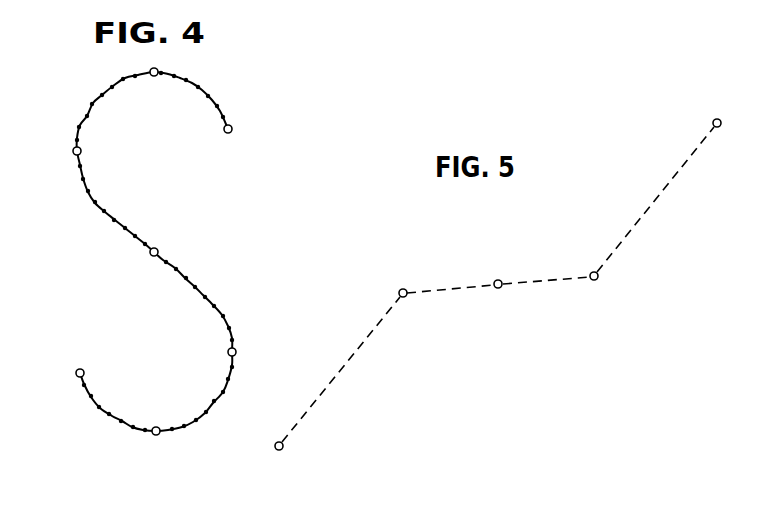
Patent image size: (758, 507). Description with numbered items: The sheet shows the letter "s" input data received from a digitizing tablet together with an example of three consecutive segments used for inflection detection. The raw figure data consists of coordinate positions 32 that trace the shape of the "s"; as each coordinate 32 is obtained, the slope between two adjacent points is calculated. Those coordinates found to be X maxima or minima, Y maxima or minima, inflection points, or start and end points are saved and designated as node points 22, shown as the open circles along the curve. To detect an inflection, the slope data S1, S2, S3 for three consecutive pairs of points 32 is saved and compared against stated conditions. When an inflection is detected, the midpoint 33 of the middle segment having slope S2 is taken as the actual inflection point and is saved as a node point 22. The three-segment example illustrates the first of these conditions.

In FIG. 4, the node points 22 is at (154, 77).
In FIG. 4, the coordinate positions 32 is at (190, 82).
In FIG. 5, the coordinate positions 32 is at (276, 449).
In FIG. 5, the midpoint 33 is at (498, 289).
In FIG. 5, the slope of first segment S1 is at (341, 368).
In FIG. 5, the slope of middle segment S2 is at (550, 275).
In FIG. 5, the slope of third segment S3 is at (641, 216).